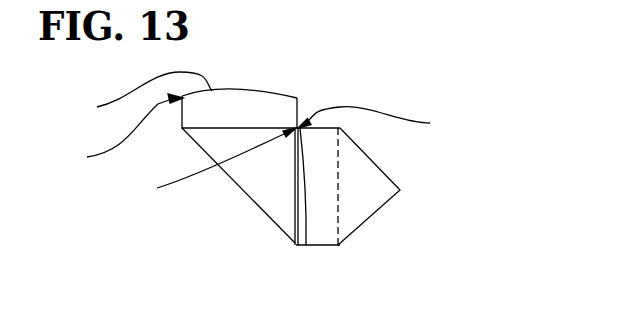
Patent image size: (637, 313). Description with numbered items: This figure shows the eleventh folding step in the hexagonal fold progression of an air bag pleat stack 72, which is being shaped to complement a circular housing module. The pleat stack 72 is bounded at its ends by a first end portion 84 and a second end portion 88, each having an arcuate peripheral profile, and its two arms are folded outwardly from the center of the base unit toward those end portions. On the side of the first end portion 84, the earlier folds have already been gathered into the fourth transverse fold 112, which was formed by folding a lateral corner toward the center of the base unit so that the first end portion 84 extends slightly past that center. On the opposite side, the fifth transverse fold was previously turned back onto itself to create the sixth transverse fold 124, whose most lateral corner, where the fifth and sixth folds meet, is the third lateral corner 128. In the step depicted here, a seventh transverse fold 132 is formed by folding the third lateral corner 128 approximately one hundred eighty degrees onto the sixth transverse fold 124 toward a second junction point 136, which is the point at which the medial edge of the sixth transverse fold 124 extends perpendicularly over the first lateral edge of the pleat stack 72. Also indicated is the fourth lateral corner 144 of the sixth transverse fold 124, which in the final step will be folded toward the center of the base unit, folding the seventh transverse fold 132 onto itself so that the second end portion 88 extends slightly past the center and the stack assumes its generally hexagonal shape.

The sixth transverse fold 124 is at (257, 113).
The seventh transverse fold 132 is at (278, 198).
The pleat stack 72 is at (302, 245).
The first end portion 84 is at (305, 218).
The fourth transverse fold 112 is at (358, 187).
The second end portion 88 is at (139, 95).
The fourth lateral corner 144 is at (115, 130).
The third lateral corner 128 is at (207, 163).
The second junction point 136 is at (384, 120).